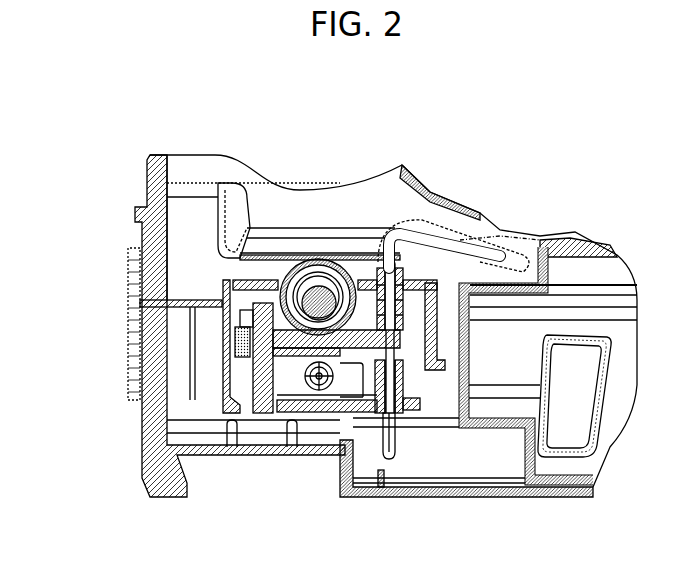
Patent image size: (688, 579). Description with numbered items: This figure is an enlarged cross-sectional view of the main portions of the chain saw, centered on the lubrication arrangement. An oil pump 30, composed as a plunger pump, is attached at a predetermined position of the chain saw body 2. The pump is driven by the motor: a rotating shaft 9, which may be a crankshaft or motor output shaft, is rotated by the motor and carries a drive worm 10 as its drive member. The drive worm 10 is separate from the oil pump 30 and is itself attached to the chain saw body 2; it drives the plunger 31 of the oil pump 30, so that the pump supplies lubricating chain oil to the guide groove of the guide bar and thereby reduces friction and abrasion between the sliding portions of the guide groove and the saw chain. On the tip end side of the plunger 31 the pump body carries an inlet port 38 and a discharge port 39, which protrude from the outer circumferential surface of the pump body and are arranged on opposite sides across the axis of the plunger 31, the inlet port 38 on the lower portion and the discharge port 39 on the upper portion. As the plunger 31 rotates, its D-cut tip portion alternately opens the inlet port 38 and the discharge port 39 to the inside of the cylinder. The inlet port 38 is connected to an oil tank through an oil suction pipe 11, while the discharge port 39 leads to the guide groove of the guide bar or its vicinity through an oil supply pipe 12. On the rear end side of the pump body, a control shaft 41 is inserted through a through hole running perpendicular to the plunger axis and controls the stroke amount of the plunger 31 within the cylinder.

The chain saw body 2 is at (528, 243).
The rotating shaft 9 is at (305, 302).
The drive worm 10 is at (309, 279).
The oil suction pipe 11 is at (392, 427).
The oil supply pipe 12 is at (393, 290).
The oil pump 30 is at (345, 380).
The plunger 31 is at (305, 345).
The inlet port 38 is at (392, 365).
The discharge port 39 is at (395, 318).
The control shaft 41 is at (260, 378).